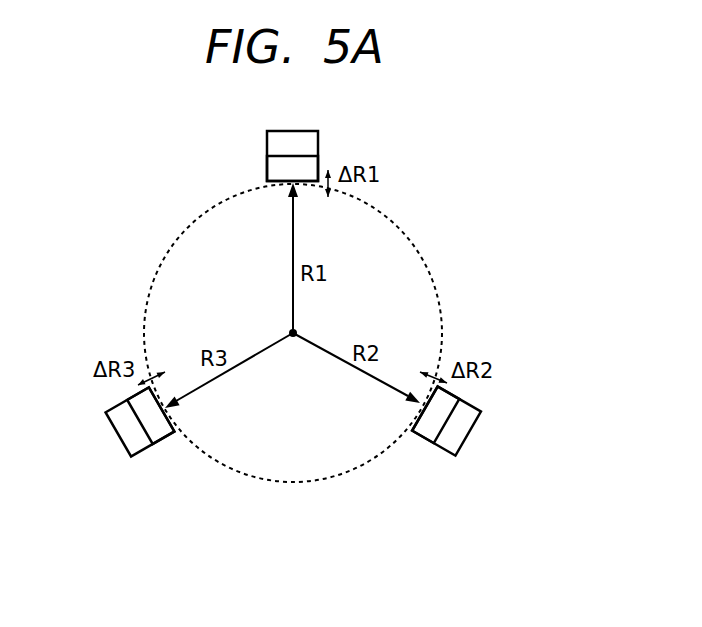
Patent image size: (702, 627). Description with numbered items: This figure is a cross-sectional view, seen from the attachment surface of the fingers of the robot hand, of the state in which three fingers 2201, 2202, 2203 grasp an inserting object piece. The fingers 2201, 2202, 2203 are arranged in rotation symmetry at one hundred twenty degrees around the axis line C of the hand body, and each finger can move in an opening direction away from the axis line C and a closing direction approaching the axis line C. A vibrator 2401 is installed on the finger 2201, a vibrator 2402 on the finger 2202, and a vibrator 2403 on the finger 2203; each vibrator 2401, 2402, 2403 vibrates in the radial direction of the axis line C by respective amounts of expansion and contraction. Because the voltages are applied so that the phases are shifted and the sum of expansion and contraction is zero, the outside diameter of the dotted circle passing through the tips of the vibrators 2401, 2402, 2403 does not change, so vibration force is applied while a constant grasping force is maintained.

The finger 2201 is at (267, 143).
The vibrator 2401 is at (267, 163).
The finger 2202 is at (463, 448).
The vibrator 2402 is at (418, 441).
The finger 2203 is at (138, 457).
The vibrator 2403 is at (168, 436).
The axis line C is at (293, 333).